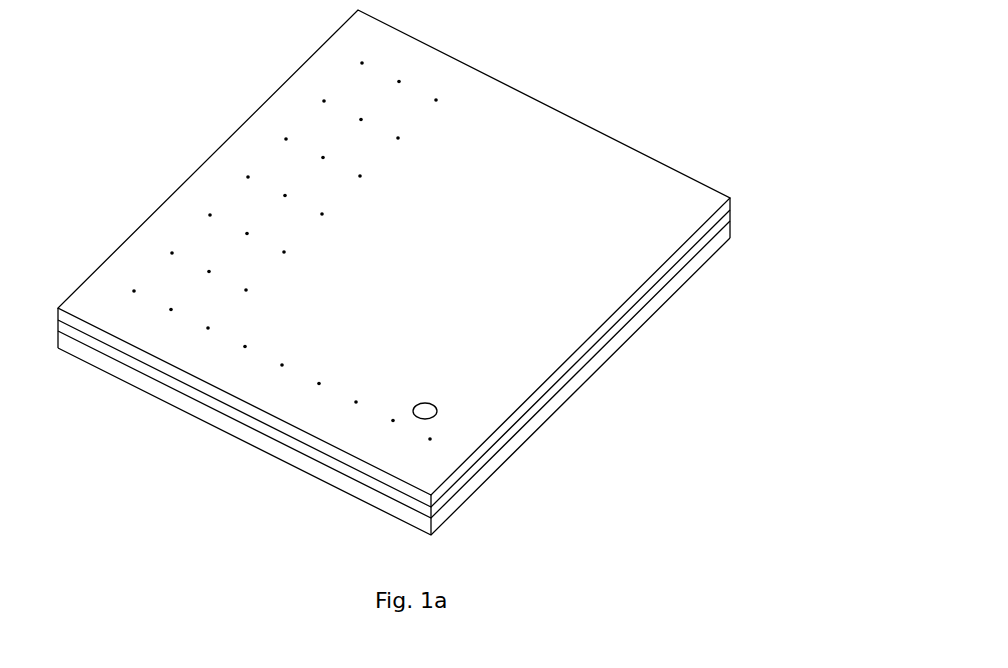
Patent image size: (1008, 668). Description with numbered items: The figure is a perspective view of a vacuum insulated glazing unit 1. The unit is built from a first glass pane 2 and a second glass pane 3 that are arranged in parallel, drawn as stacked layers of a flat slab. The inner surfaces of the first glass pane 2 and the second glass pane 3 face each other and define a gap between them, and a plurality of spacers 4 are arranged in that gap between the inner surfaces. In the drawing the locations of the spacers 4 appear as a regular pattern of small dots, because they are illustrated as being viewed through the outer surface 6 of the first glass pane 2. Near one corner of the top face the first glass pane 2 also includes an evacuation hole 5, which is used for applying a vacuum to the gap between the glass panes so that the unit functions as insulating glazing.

The vacuum insulated glazing unit 1 is at (394, 272).
The first glass pane 2 is at (660, 185).
The second glass pane 3 is at (585, 380).
The spacers 4 is at (207, 212).
The evacuation hole 5 is at (437, 408).
The outer surface 6 is at (500, 269).